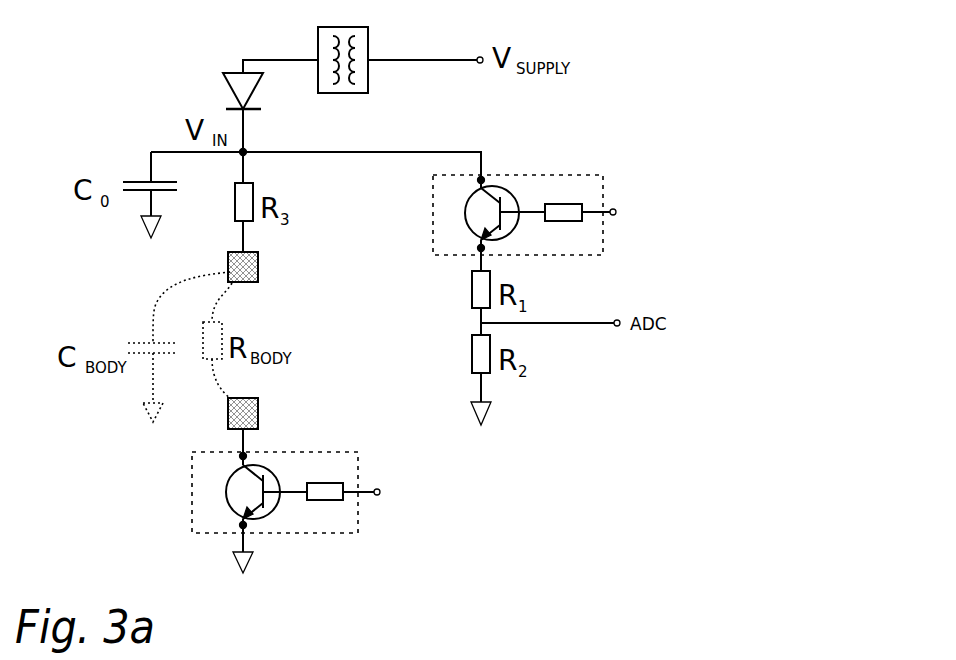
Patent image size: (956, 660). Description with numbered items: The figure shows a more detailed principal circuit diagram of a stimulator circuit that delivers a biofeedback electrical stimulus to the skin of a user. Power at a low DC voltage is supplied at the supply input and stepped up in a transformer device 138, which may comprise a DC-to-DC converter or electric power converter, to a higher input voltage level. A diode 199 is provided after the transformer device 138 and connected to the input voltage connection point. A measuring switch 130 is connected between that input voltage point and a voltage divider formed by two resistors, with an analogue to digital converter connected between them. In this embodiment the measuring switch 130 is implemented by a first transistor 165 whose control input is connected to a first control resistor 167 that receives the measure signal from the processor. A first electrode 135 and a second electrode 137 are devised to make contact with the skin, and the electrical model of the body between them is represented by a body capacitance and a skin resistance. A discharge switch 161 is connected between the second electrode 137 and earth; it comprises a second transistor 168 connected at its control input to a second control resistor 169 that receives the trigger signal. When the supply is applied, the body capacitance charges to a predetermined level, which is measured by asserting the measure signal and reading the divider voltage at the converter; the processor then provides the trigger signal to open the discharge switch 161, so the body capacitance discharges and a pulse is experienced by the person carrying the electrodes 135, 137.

The diode 199 is at (232, 83).
The transformer device 138 is at (368, 80).
The measuring switch 130 is at (598, 184).
The first transistor 165 is at (470, 208).
The first control resistor 167 is at (565, 208).
The first electrode 135 is at (258, 268).
The second electrode 137 is at (255, 410).
The discharge switch 161 is at (198, 463).
The second transistor 168 is at (230, 508).
The second control resistor 169 is at (334, 497).